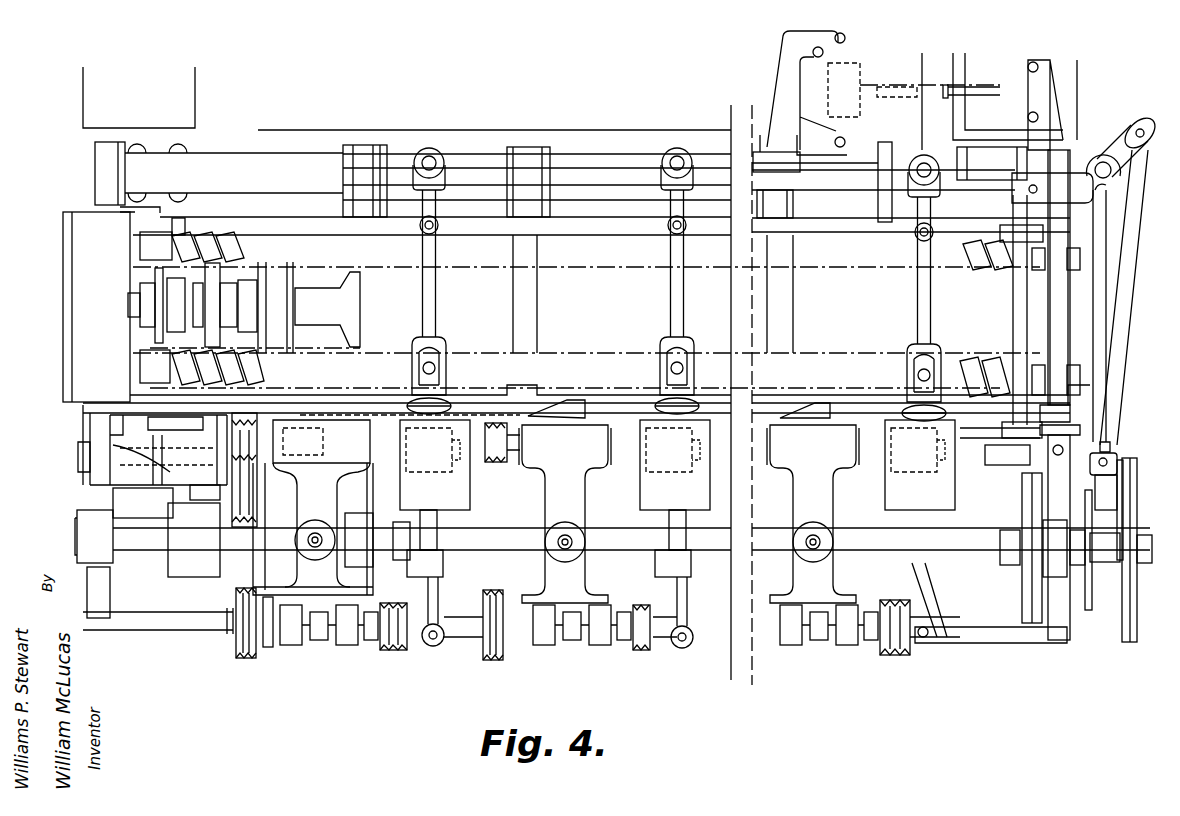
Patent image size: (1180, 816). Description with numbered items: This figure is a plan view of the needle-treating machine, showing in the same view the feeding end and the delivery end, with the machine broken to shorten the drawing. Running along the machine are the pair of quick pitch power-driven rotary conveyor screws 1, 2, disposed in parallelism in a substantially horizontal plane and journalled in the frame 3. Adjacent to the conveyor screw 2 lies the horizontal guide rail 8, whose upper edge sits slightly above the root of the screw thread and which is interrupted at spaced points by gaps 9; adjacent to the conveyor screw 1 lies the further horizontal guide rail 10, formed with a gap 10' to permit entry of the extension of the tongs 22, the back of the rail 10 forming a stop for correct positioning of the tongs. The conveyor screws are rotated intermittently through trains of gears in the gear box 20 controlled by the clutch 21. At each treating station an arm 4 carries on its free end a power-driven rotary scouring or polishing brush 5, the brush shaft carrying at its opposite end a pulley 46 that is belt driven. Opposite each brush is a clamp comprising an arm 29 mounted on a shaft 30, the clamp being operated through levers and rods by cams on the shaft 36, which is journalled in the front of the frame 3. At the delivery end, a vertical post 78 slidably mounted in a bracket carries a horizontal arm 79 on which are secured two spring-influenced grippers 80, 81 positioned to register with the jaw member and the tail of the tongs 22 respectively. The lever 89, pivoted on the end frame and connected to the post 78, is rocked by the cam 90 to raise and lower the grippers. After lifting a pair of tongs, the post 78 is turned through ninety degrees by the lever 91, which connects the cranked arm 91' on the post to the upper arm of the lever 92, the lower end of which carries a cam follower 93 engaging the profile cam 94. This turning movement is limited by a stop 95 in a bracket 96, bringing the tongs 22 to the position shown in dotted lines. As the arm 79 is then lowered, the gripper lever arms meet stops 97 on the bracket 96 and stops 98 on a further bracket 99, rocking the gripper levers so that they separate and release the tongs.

The rotary conveyor screw 1 is at (975, 272).
The rotary conveyor screw 2 is at (980, 370).
The frame 3 is at (97, 500).
The arm 4 is at (556, 511).
The scouring or polishing brush 5 is at (420, 478).
The horizontal guide rail 8 is at (612, 385).
The gaps or interruptions 9 is at (560, 402).
The horizontal guide rail 10 is at (601, 227).
The gap 10' is at (196, 216).
The gear box 20 is at (96, 307).
The clutch 21 is at (248, 318).
The tongs 22 is at (150, 347).
The arm 29 is at (436, 312).
The shaft 30 is at (570, 182).
The shaft 36 is at (268, 533).
The pulley 46 is at (508, 444).
The vertical post 78 is at (1112, 170).
The horizontal arm 79 is at (1013, 297).
The gripper 80 is at (1010, 432).
The gripper 81 is at (1014, 228).
The lever 89 is at (1106, 343).
The cam 90 is at (1085, 600).
The lever 91 is at (1134, 297).
The cranked arm 91' is at (1129, 141).
The lever 92 is at (1117, 470).
The cam follower 93 is at (1123, 486).
The profile cam 94 is at (1137, 525).
The stop 95 is at (830, 103).
The bracket 96 is at (779, 72).
The stops 97 is at (837, 90).
The stops 98 is at (1028, 70).
The bracket 99 is at (1038, 60).